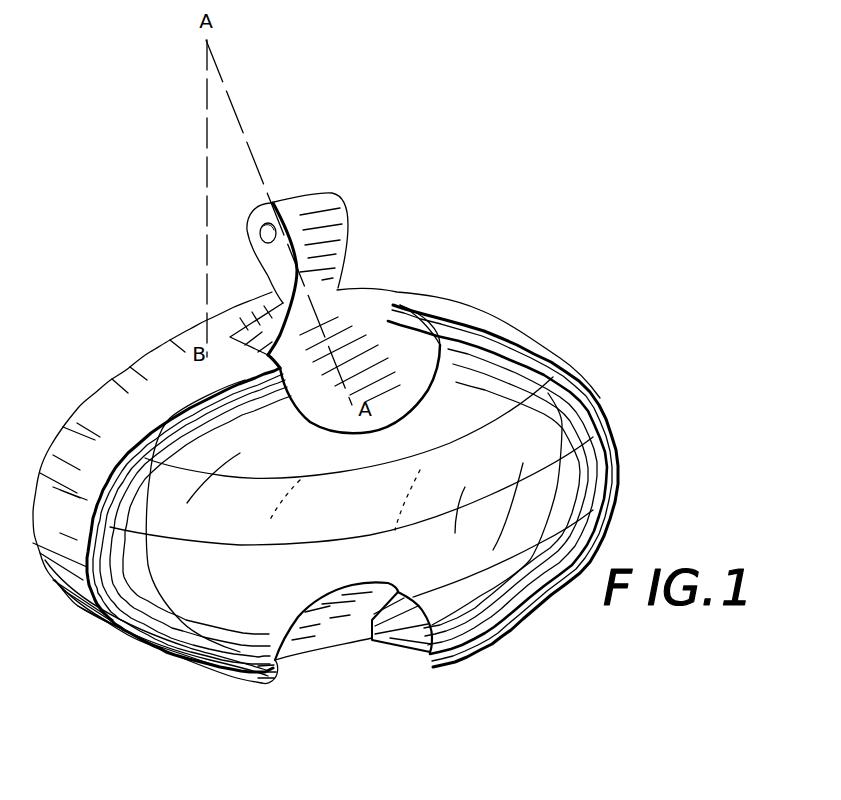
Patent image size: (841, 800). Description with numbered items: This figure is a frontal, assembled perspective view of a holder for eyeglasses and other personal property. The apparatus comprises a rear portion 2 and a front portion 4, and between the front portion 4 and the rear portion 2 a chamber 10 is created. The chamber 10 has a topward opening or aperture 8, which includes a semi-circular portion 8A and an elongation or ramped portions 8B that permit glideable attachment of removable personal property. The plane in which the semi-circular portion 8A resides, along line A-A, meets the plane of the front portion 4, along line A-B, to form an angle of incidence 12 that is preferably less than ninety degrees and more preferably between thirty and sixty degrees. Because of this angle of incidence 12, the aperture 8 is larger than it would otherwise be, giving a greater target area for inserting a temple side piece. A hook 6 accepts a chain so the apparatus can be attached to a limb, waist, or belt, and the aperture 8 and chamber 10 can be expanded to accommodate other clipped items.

The rear portion 2 is at (508, 323).
The front portion 4 is at (570, 423).
The hook 6 is at (337, 213).
The aperture 8 is at (357, 310).
The semi-circular portion 8A is at (410, 344).
The ramped portions 8B is at (272, 306).
The chamber 10 is at (341, 620).
The angle of incidence 12 is at (247, 136).